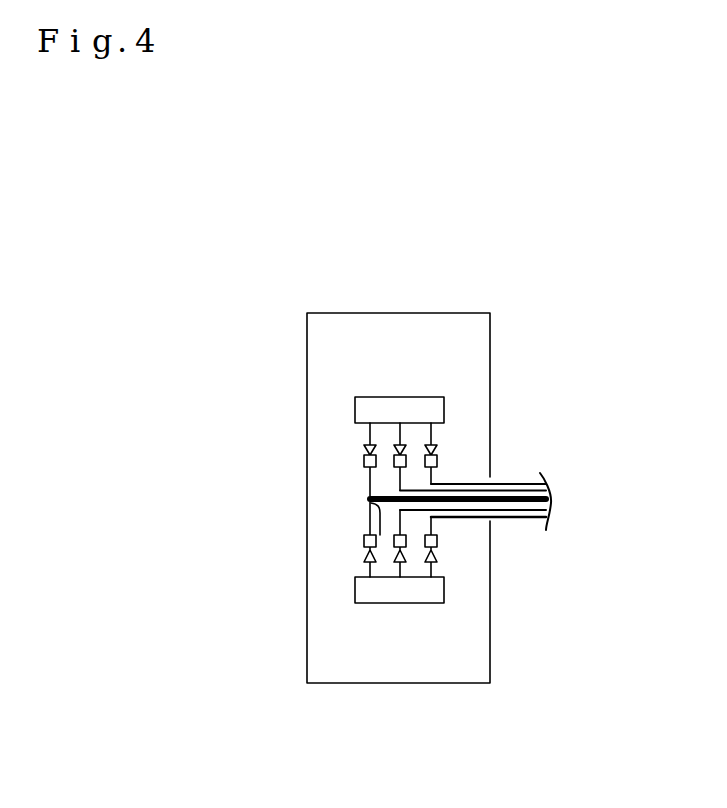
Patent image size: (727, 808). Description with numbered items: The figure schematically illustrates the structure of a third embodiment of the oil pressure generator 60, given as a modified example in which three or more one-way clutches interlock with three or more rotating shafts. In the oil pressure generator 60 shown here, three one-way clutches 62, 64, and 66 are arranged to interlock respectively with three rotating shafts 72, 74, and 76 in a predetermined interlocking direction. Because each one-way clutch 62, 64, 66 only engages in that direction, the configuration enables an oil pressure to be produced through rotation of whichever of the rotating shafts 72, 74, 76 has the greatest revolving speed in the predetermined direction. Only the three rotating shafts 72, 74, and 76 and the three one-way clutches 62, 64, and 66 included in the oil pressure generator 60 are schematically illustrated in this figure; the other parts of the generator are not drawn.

The oil pressure generator 60 is at (518, 325).
The one-way clutch 62 is at (364, 460).
The one-way clutch 64 is at (394, 464).
The one-way clutch 66 is at (438, 458).
The rotating shaft 72 is at (369, 517).
The rotating shaft 74 is at (433, 518).
The rotating shaft 76 is at (517, 518).